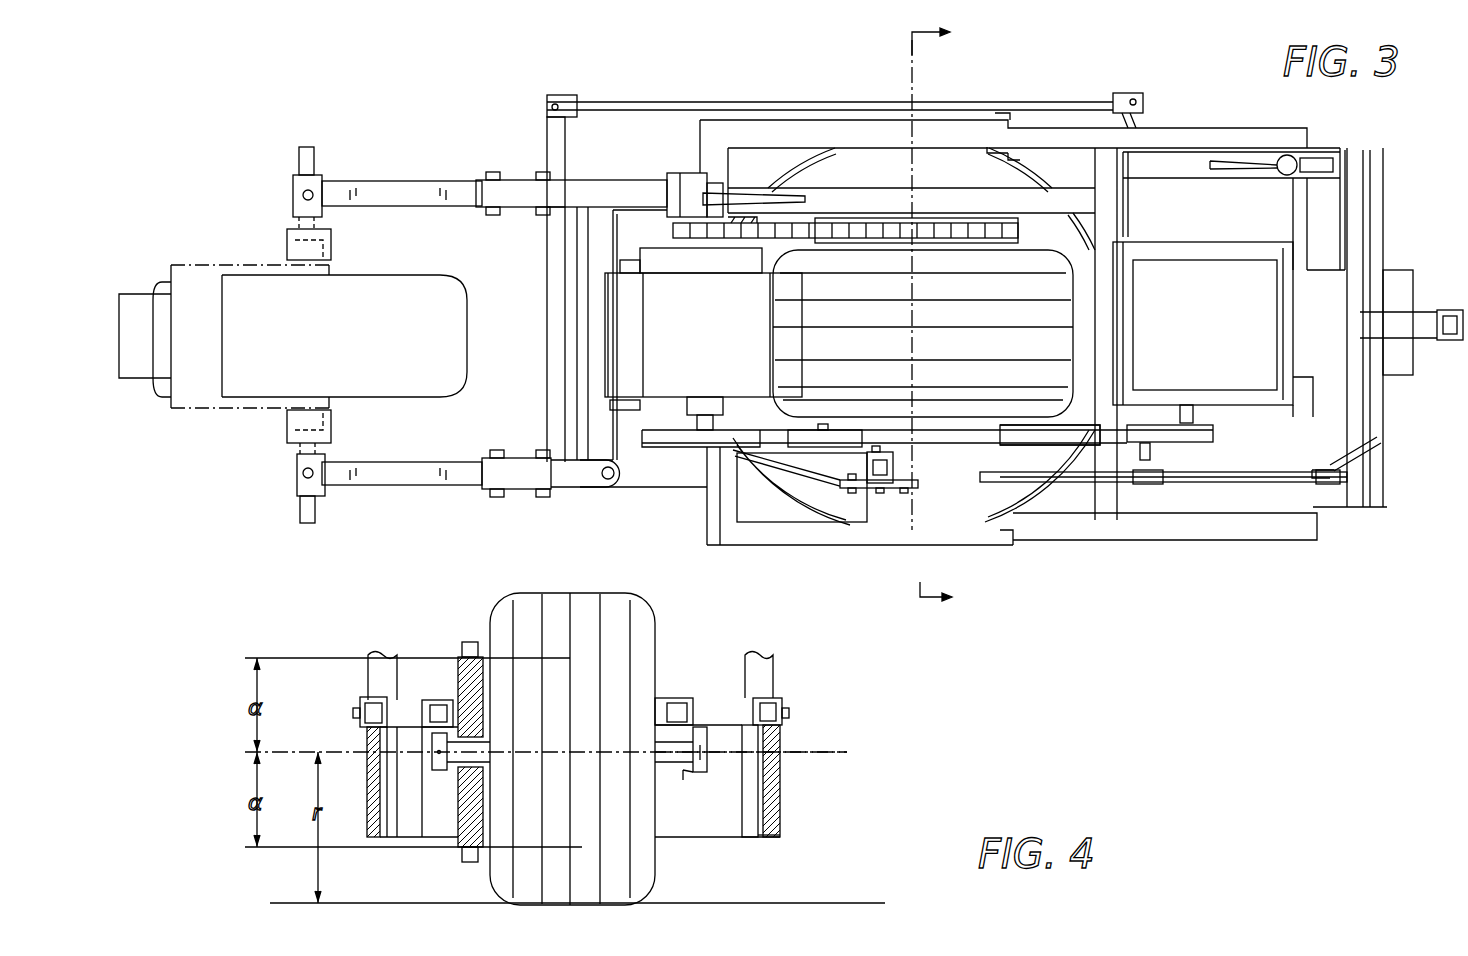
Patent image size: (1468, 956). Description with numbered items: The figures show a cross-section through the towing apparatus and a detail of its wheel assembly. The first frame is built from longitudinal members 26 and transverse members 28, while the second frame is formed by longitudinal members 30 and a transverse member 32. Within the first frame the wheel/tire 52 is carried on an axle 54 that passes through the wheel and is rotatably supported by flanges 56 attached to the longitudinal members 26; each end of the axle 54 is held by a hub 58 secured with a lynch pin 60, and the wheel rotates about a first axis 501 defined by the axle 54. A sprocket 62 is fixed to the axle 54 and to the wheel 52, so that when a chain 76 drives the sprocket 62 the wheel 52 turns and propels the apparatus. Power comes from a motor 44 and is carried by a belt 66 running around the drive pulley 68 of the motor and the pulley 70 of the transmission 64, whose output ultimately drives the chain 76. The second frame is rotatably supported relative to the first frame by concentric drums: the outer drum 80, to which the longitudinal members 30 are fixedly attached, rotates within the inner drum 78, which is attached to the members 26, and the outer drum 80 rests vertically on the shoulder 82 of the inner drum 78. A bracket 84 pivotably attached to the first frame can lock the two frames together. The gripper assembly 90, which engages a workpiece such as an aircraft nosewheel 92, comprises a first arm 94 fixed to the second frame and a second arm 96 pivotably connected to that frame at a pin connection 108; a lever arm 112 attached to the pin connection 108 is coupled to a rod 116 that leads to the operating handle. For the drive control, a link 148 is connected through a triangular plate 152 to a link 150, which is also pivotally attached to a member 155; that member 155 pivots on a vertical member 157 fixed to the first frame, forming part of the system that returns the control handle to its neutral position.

In FIG. 3, the longitudinal members 26 is at (835, 160).
In FIG. 4, the longitudinal members 26 is at (435, 705).
In FIG. 3, the transverse members 28 is at (722, 505).
In FIG. 3, the longitudinal members 30 is at (640, 188).
In FIG. 3, the transverse member 32 is at (597, 232).
In FIG. 3, the motor 44 is at (1217, 290).
In FIG. 3, the wheel/tire 52 is at (1037, 290).
In FIG. 4, the wheel/tire 52 is at (522, 606).
In FIG. 4, the axle 54 is at (670, 765).
In FIG. 4, the flanges 56 is at (448, 772).
In FIG. 4, the hub 58 is at (385, 738).
In FIG. 4, the lynch pin 60 is at (702, 740).
In FIG. 4, the sprocket 62 is at (470, 842).
In FIG. 3, the transmission 64 is at (620, 340).
In FIG. 3, the belt 66 is at (1022, 437).
In FIG. 3, the drive pulley 68 is at (1195, 442).
In FIG. 3, the pulley 70 is at (690, 447).
In FIG. 3, the chain 76 is at (770, 230).
In FIG. 4, the inner drum 78 is at (782, 828).
In FIG. 4, the outer drum 80 is at (782, 792).
In FIG. 4, the shoulder 82 is at (782, 803).
In FIG. 3, the bracket 84 is at (682, 180).
In FIG. 3, the gripper assembly 90 is at (431, 162).
In FIG. 3, the wheel 92 is at (405, 298).
In FIG. 3, the first arm 94 is at (382, 190).
In FIG. 3, the second arm 96 is at (395, 487).
In FIG. 3, the pin connection 108 is at (608, 490).
In FIG. 3, the lever arm 112 is at (552, 130).
In FIG. 3, the rod 116 is at (625, 103).
In FIG. 3, the link 148 is at (1385, 445).
In FIG. 3, the link 150 is at (1245, 482).
In FIG. 3, the triangular plate 152 is at (1330, 485).
In FIG. 3, the member 155 is at (890, 488).
In FIG. 3, the vertical member 157 is at (895, 470).
In FIG. 3, the first axis 501 is at (910, 70).
In FIG. 4, the first axis 501 is at (832, 746).